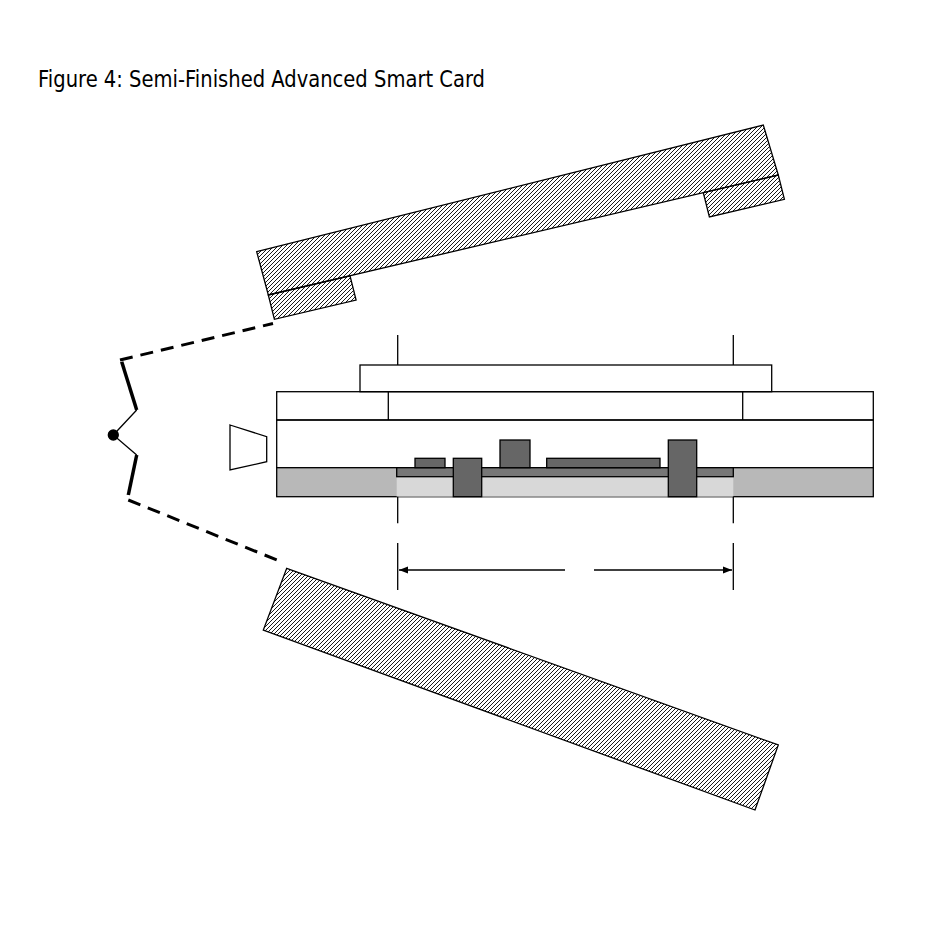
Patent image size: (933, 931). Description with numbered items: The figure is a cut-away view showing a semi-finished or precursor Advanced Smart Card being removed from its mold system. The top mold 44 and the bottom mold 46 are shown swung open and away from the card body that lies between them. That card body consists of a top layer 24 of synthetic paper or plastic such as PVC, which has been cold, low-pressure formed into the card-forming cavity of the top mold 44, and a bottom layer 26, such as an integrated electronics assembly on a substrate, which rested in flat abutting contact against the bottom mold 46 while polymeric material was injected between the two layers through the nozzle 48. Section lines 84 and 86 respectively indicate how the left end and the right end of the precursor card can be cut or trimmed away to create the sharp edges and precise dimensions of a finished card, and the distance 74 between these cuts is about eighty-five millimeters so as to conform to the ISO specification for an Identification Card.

The top layer 24 is at (575, 383).
The bottom layer 26 is at (585, 488).
The top mold 44 is at (452, 233).
The bottom mold 46 is at (502, 683).
The nozzle 48 is at (248, 447).
The distance 74 is at (566, 566).
The section line 84 is at (398, 335).
The section line 86 is at (733, 335).